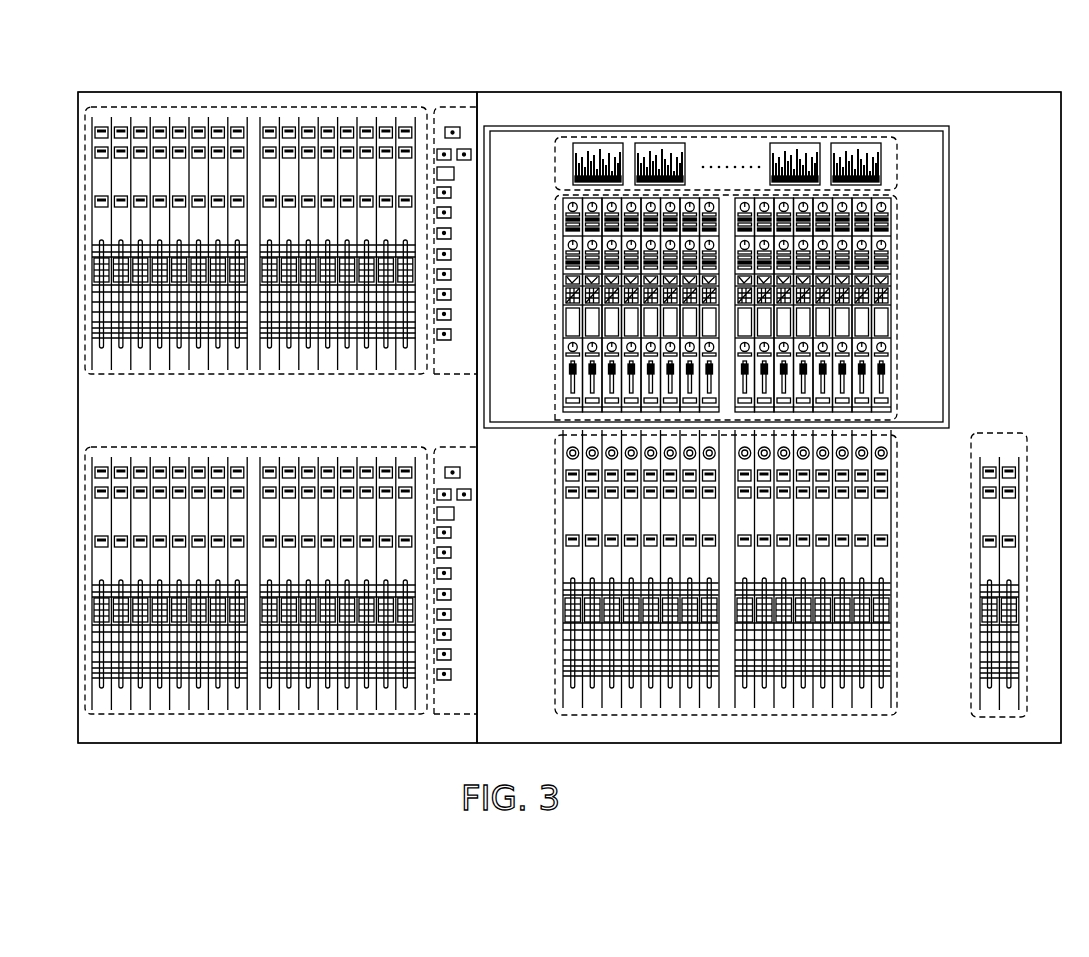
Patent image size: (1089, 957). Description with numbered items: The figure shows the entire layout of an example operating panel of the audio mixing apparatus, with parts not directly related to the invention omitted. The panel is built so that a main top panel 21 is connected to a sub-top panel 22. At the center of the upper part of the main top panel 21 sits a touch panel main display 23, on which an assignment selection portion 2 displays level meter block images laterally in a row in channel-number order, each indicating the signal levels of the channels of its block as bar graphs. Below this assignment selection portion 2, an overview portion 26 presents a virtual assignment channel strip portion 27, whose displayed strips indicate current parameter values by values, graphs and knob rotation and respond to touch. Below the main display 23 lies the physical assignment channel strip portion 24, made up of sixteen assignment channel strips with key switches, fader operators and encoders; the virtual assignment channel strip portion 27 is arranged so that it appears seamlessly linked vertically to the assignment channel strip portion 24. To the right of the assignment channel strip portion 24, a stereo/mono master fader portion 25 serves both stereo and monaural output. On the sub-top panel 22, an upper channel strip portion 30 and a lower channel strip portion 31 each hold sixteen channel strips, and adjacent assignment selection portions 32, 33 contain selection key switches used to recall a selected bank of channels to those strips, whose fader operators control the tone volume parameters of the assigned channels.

The main top panel 21 is at (1061, 92).
The sub-top panel 22 is at (477, 92).
The touch panel main display 23 is at (909, 126).
The assignment selection portion 2 is at (898, 170).
The assignment channel strip portion 24 is at (725, 715).
The stereo/mono master fader portion 25 is at (998, 717).
The overview portion 26 is at (898, 231).
The virtual assignment channel strip portion 27 is at (898, 280).
The upper channel strip portion 30 is at (267, 107).
The lower channel strip portion 31 is at (255, 715).
The assignment selection portion 32 is at (454, 107).
The assignment selection portion 33 is at (453, 723).